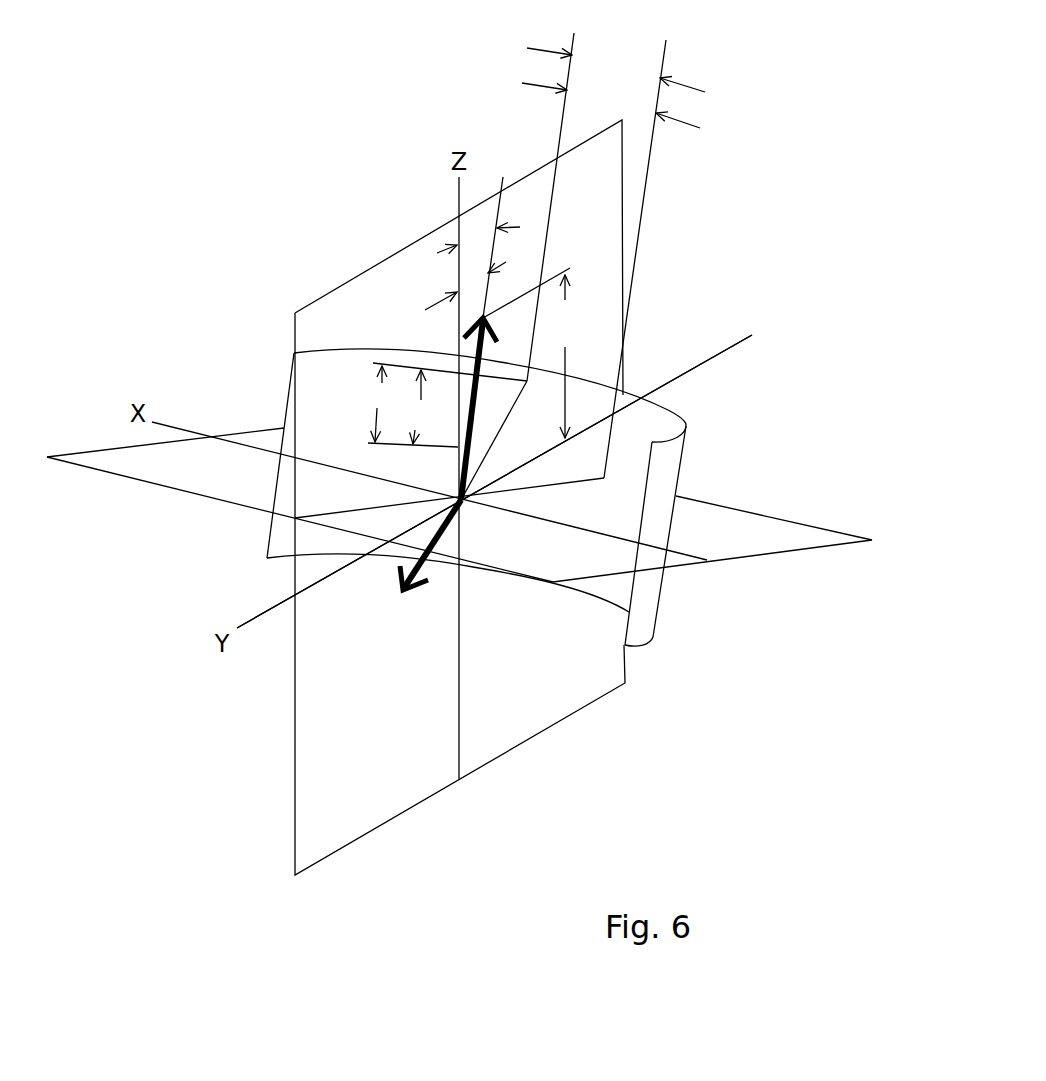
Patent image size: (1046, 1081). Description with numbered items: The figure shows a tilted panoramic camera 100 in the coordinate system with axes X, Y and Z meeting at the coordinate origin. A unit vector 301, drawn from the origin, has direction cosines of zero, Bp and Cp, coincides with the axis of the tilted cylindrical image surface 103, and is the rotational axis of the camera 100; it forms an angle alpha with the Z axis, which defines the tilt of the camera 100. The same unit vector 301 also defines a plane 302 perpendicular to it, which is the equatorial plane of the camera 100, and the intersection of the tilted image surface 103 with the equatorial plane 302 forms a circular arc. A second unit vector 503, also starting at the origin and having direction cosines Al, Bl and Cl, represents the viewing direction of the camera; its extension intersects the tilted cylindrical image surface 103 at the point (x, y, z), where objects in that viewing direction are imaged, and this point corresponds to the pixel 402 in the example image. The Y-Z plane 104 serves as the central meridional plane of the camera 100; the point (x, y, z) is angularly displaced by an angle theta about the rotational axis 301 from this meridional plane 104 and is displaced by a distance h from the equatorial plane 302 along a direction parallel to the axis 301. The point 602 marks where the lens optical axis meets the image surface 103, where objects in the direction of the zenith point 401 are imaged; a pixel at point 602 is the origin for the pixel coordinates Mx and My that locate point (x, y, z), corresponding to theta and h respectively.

The camera 100 is at (778, 121).
The tilted cylindrical image surface 103 is at (668, 458).
The Y-Z plane 104 is at (333, 300).
The unit vector 301 is at (474, 331).
The plane 302 is at (118, 452).
The zenith point 401 is at (494, 481).
The pixel 402 is at (527, 381).
The unit vector 503 is at (398, 595).
The point 602 is at (538, 463).